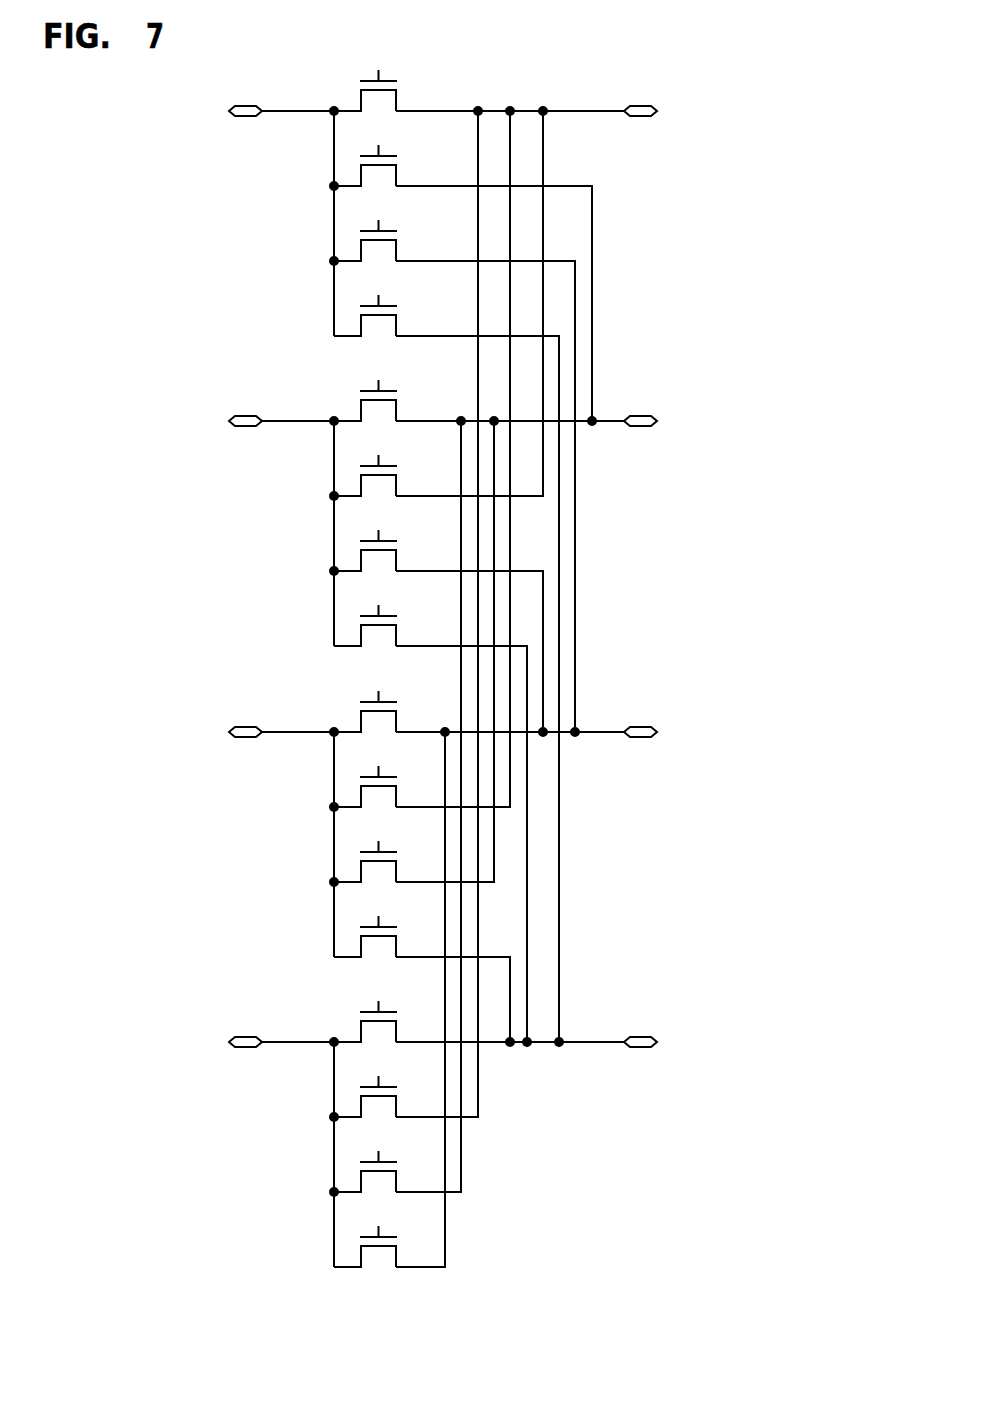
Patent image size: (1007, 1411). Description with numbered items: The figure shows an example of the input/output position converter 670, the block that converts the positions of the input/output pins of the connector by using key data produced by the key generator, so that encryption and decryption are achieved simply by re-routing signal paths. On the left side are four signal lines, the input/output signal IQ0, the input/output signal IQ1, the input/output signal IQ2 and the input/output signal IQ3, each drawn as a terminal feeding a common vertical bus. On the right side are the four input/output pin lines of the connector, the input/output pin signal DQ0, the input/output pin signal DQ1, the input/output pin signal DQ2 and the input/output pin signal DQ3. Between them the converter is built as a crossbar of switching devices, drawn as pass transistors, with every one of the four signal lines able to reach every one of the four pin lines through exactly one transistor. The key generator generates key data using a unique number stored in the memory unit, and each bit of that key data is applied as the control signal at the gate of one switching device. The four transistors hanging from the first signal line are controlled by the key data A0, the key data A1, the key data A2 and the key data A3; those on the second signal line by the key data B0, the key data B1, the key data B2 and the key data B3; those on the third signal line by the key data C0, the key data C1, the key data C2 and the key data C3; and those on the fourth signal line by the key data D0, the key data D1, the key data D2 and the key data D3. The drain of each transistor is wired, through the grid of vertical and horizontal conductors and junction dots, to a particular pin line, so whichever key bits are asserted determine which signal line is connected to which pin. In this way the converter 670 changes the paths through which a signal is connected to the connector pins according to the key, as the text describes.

The input/output position converter 670 is at (513, 645).
The input/output signal IQ 0 IQ0 is at (247, 113).
The input/output signal IQ 1 IQ1 is at (247, 423).
The input/output signal IQ 2 IQ2 is at (247, 734).
The input/output signal IQ 3 IQ3 is at (247, 1044).
The input/output pin signal DQ 0 DQ0 is at (567, 113).
The input/output pin signal DQ 1 DQ1 is at (567, 423).
The input/output pin signal DQ 2 DQ2 is at (567, 734).
The input/output pin signal DQ 3 DQ3 is at (567, 1044).
The key data A 0 A0 is at (368, 78).
The key data A 1 A1 is at (368, 153).
The key data A 2 A2 is at (368, 228).
The key data A 3 A3 is at (368, 303).
The key data B 0 B0 is at (368, 388).
The key data B 1 B1 is at (368, 463).
The key data B 2 B2 is at (368, 538).
The key data B 3 B3 is at (368, 613).
The key data C 0 C0 is at (368, 699).
The key data C 1 C1 is at (368, 774).
The key data C 2 C2 is at (368, 849).
The key data C 3 C3 is at (368, 924).
The key data D 0 D0 is at (368, 1009).
The key data D 1 D1 is at (368, 1084).
The key data D 2 D2 is at (368, 1159).
The key data D 3 D3 is at (368, 1234).